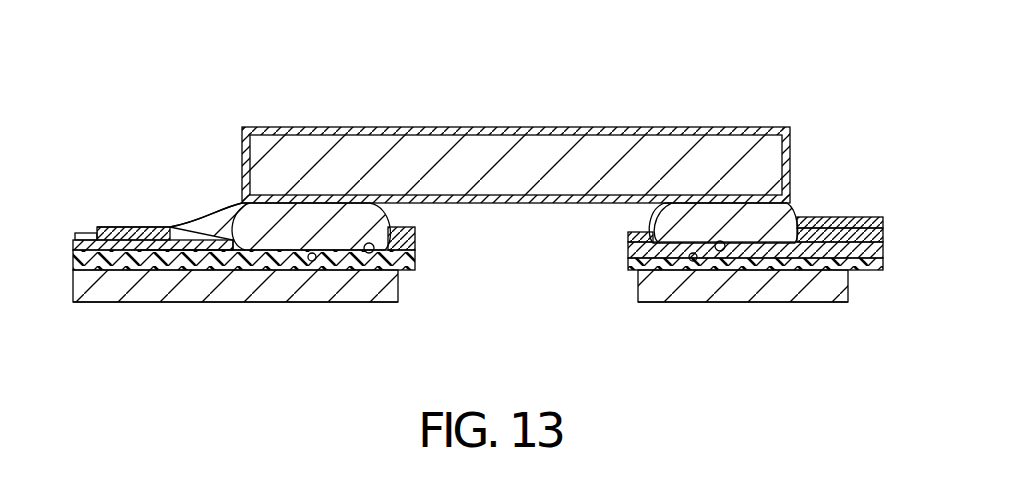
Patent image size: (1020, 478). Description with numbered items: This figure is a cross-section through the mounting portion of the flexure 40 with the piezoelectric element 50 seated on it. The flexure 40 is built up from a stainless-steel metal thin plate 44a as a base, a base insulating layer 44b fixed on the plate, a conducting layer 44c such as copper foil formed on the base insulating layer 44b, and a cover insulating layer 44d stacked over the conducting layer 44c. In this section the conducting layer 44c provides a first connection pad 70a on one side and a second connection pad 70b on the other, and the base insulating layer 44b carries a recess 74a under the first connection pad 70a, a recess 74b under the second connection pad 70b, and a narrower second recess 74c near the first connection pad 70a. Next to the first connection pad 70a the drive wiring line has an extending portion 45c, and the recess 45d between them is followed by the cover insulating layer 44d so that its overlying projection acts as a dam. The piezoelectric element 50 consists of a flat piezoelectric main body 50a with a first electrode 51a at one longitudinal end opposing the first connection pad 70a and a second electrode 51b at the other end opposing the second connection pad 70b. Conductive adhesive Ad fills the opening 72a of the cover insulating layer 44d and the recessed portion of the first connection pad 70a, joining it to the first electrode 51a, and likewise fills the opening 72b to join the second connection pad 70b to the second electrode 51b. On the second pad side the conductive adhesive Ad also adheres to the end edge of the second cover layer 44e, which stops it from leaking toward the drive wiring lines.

The flexure 40 is at (660, 316).
The metal thin plate 44a is at (180, 292).
The base insulating layer 44b is at (226, 262).
The conducting layer 44c is at (296, 256).
The cover insulating layer 44d is at (90, 233).
The second cover layer 44e is at (818, 217).
The extending portion 45c is at (123, 237).
The recess 45d is at (185, 226).
The piezoelectric element 50 is at (403, 118).
The piezoelectric main body 50a is at (532, 134).
The first electrode 51a is at (242, 162).
The second electrode 51b is at (792, 156).
The first connection pad 70a is at (370, 253).
The second connection pad 70b is at (720, 251).
The opening 72a is at (263, 212).
The opening 72b is at (657, 222).
The recess 74a is at (308, 252).
The recess 74b is at (694, 257).
The second recess 74c is at (158, 254).
The conductive adhesive Ad is at (313, 253).